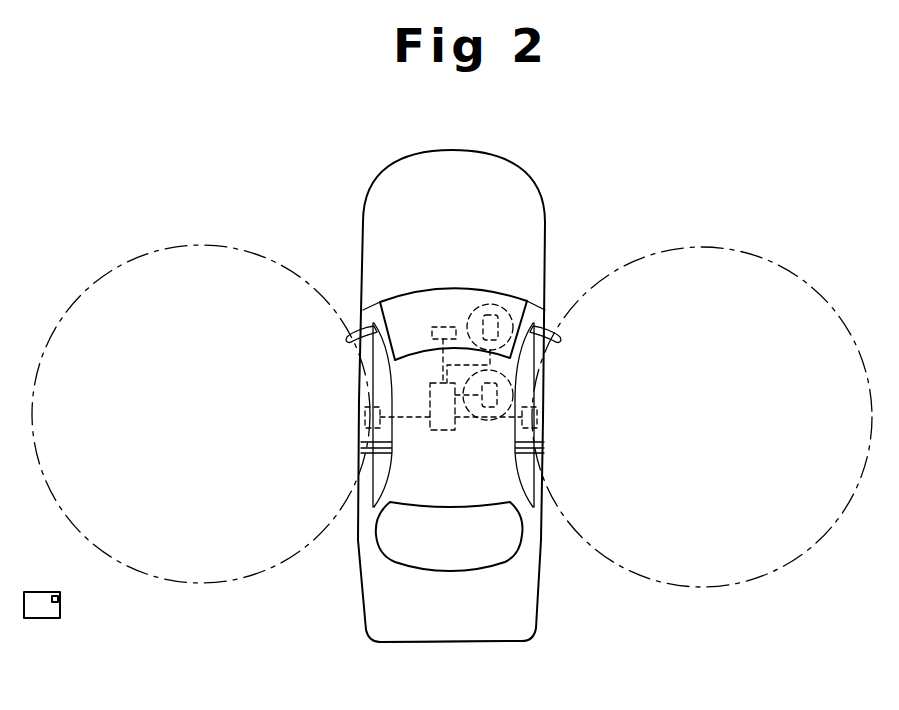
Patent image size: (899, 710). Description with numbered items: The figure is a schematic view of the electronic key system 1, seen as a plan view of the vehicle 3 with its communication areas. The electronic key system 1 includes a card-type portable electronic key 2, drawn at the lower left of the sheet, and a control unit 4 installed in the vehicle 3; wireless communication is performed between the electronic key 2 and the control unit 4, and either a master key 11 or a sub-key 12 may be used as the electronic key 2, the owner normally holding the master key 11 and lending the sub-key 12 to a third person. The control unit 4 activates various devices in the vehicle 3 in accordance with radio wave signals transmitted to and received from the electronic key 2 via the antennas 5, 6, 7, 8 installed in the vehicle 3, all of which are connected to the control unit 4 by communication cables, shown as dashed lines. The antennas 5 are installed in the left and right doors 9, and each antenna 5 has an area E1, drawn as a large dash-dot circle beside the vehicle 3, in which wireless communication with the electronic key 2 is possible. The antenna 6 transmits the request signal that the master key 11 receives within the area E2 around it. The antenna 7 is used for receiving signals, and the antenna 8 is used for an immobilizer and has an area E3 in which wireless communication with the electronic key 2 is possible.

The electronic key system 1 is at (633, 188).
The electronic key 2 is at (40, 618).
The master key 11 is at (42, 605).
The sub-key 12 is at (42, 605).
The vehicle 3 is at (428, 643).
The control unit 4 is at (445, 431).
The antenna 5 is at (365, 416).
The antenna 6 is at (513, 395).
The antenna 7 is at (432, 331).
The antenna 8 is at (491, 303).
The door 9 is at (362, 367).
The area E1 is at (213, 584).
The area E2 is at (497, 420).
The area E3 is at (466, 309).